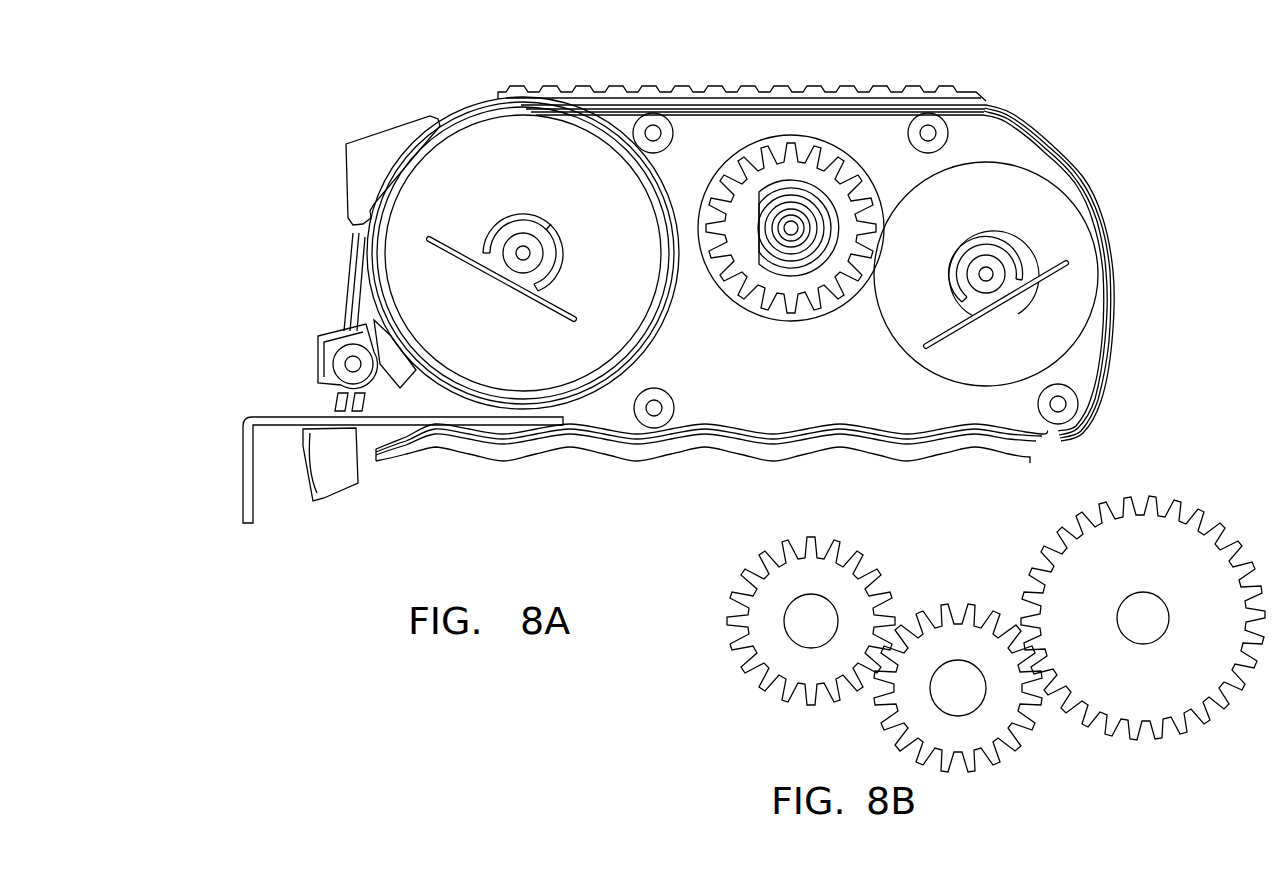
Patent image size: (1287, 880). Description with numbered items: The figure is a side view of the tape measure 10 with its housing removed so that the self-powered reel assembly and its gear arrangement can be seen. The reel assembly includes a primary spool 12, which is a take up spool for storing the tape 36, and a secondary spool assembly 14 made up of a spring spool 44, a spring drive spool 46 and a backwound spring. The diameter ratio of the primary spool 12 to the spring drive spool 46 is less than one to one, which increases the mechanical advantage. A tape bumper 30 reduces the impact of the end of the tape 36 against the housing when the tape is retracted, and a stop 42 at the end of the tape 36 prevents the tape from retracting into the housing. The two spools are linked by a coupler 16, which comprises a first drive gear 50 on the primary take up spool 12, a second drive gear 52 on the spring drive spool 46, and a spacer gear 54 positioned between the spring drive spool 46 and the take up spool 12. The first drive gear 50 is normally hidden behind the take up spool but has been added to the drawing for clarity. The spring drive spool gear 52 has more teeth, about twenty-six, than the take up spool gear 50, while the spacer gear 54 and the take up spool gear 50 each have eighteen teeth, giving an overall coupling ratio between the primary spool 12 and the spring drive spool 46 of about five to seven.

In FIG. 8A, the tape measure 10 is at (281, 118).
In FIG. 8A, the primary spool 12 is at (480, 135).
In FIG. 8A, the secondary spool assembly 14 is at (1094, 108).
In FIG. 8B, the coupler 16 is at (686, 625).
In FIG. 8A, the tape bumper 30 is at (328, 470).
In FIG. 8A, the tape 36 is at (463, 417).
In FIG. 8A, the stop 42 is at (236, 465).
In FIG. 8A, the spring spool 44 is at (1003, 352).
In FIG. 8A, the spring drive spool 46 is at (794, 222).
In FIG. 8B, the first drive gear 50 is at (782, 703).
In FIG. 8B, the second drive gear 52 is at (1168, 497).
In FIG. 8A, the spacer gear 54 is at (718, 292).
In FIG. 8B, the spacer gear 54 is at (997, 757).